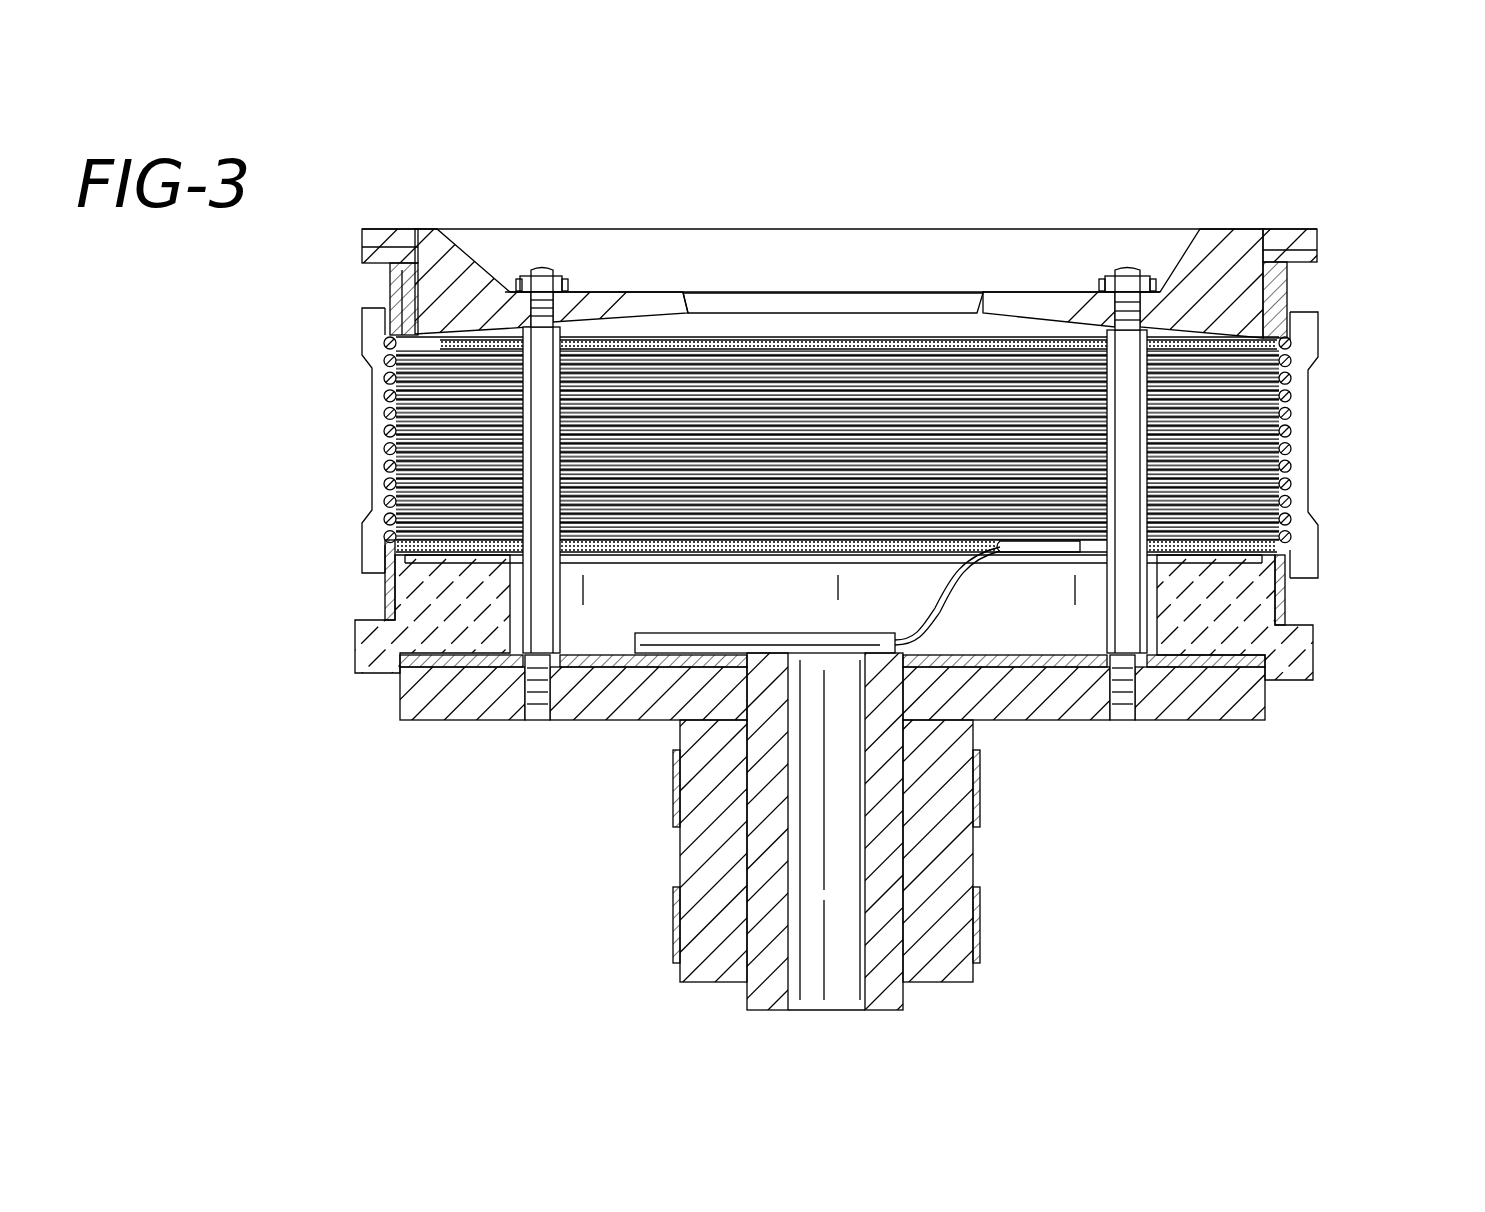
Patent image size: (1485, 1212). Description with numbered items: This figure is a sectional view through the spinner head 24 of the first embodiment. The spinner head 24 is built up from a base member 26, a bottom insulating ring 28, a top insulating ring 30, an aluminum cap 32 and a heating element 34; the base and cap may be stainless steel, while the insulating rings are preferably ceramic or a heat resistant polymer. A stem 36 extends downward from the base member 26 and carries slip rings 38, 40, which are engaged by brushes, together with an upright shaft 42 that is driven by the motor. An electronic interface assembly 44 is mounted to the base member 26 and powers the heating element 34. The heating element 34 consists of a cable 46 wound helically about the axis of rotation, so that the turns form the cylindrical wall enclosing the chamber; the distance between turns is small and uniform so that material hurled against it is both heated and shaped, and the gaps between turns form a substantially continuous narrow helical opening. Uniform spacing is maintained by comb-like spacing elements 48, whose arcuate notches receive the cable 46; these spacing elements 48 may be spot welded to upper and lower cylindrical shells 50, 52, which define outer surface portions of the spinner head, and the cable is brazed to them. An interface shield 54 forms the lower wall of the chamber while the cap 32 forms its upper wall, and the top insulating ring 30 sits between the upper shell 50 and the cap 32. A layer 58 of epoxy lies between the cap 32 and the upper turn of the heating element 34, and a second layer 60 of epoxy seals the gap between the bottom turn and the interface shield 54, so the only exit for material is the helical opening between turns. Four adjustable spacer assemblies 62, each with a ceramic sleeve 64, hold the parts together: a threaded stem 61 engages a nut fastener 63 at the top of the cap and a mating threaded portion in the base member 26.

The spinner head 24 is at (236, 864).
The base member 26 is at (432, 722).
The bottom insulating ring 28 is at (355, 632).
The top insulating ring 30 is at (362, 255).
The aluminum cap 32 is at (396, 228).
The heating element 34 is at (370, 453).
The stem 36 is at (973, 868).
The slip ring 38 is at (673, 800).
The slip ring 40 is at (673, 928).
The upright shaft 42 is at (855, 856).
The electronic interface assembly 44 is at (650, 638).
The cable 46 is at (1290, 462).
The comb-like spacing element 48 is at (1310, 402).
The upper cylindrical shell 50 is at (1290, 290).
The lower cylindrical shell 52 is at (1290, 606).
The interface shield 54 is at (1036, 560).
The layer of epoxy 58 is at (792, 340).
The second layer of epoxy 60 is at (798, 548).
The threaded stem 61 is at (532, 702).
The adjustable spacer assembly 62 is at (541, 276).
The nut fastener 63 is at (522, 276).
The ceramic sleeve 64 is at (552, 382).